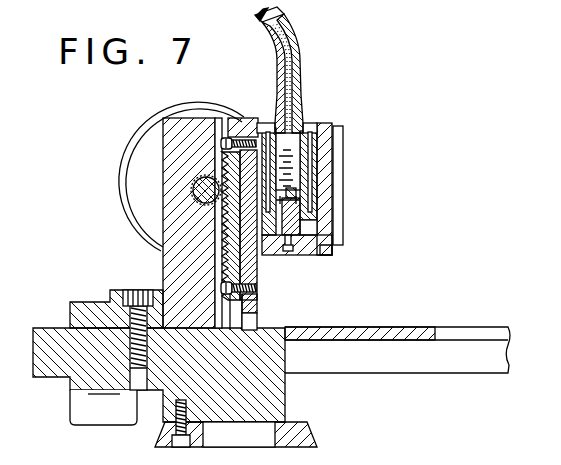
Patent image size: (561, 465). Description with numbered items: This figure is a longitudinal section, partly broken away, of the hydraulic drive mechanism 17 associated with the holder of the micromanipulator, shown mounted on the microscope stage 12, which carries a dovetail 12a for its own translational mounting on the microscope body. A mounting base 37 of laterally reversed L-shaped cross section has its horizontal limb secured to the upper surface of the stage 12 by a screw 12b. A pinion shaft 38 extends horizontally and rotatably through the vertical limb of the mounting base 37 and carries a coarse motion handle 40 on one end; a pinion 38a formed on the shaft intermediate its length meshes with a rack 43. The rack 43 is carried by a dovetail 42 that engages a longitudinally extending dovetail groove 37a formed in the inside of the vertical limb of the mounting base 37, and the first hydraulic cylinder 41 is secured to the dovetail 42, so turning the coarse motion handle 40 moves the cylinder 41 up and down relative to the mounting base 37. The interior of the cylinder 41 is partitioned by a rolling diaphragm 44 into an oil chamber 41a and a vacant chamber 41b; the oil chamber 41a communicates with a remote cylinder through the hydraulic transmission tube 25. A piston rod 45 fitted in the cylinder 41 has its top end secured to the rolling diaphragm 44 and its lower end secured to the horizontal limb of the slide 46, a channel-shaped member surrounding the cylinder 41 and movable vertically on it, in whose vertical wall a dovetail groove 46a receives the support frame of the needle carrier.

The stage 12 is at (58, 337).
The dovetail 12a is at (290, 425).
The screw 12b is at (139, 300).
The hydraulic drive mechanism 17 is at (341, 152).
The hydraulic transmission tube 25 is at (286, 22).
The mounting base 37 is at (117, 292).
The dovetail groove 37a is at (253, 322).
The pinion shaft 38 is at (148, 181).
The pinion 38a is at (190, 178).
The coarse motion handle 40 is at (151, 146).
The first hydraulic cylinder 41 is at (313, 125).
The oil chamber 41a is at (305, 162).
The vacant chamber 41b is at (333, 248).
The dovetail 42 is at (245, 118).
The rack 43 is at (207, 146).
The rolling diaphragm 44 is at (300, 207).
The piston rod 45 is at (301, 238).
The slide 46 is at (315, 250).
The dovetail groove 46a is at (333, 190).